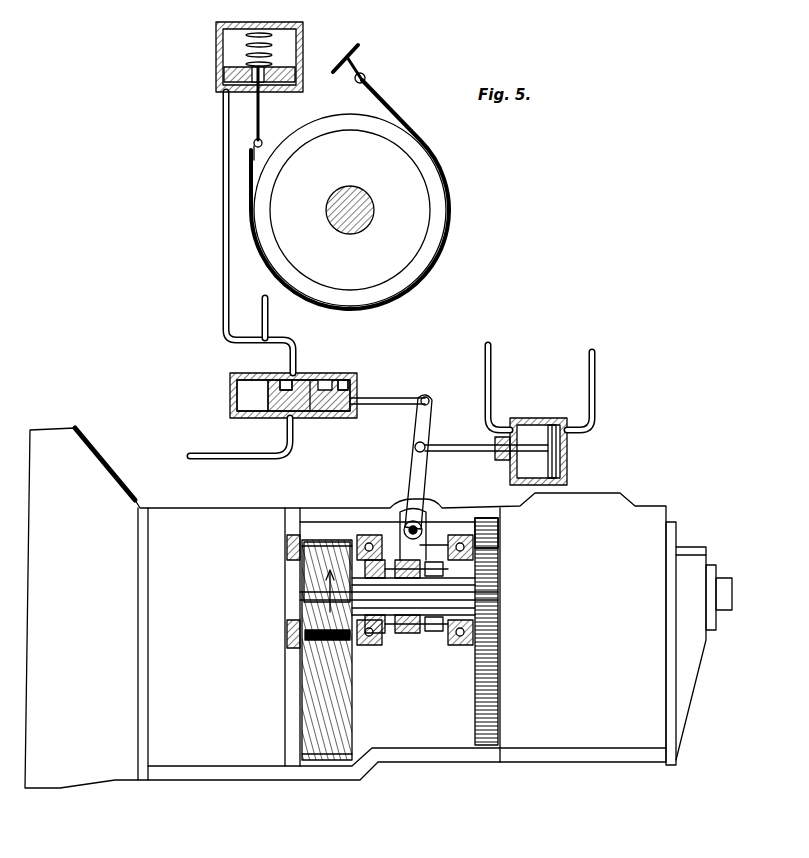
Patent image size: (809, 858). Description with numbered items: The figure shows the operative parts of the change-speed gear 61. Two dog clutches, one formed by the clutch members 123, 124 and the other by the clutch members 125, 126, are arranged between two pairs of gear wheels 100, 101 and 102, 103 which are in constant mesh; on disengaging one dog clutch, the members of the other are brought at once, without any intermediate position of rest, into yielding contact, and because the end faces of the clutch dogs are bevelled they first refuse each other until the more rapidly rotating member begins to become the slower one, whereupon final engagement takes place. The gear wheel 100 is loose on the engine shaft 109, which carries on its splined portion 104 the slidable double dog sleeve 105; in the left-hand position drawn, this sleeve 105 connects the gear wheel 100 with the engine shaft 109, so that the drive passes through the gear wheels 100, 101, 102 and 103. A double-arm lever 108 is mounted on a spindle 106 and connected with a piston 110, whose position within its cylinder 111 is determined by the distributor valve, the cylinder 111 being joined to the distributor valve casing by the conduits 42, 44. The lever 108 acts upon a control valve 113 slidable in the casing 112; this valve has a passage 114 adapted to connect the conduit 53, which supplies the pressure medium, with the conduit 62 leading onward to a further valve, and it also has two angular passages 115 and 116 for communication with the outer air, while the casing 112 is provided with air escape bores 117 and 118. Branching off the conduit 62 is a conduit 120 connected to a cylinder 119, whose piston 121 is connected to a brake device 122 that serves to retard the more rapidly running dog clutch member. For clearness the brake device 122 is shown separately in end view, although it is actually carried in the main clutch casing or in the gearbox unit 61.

The change-speed gear 61 is at (248, 760).
The gear wheel 100 is at (302, 566).
The gear wheel 101 is at (302, 684).
The gear wheel 102 is at (498, 692).
The gear wheel 103 is at (498, 573).
The splined portion 104 is at (450, 645).
The double dog sleeve 105 is at (410, 640).
The spindle 106 is at (420, 523).
The double-arm lever 108 is at (426, 422).
The engine shaft 109 is at (362, 216).
The piston 110 is at (552, 430).
The cylinder 111 is at (567, 460).
The casing 112 is at (232, 378).
The control valve 113 is at (322, 412).
The passage 114 is at (310, 382).
The angular passage 115 is at (284, 383).
The angular passage 116 is at (343, 382).
The air escape bore 117 is at (236, 398).
The air escape bore 118 is at (357, 395).
The cylinder 119 is at (216, 40).
The conduit 120 is at (223, 214).
The piston 121 is at (216, 78).
The brake device 122 is at (415, 230).
The dog clutch member 123 is at (369, 535).
The dog clutch member 124 is at (376, 645).
The dog clutch member 125 is at (440, 535).
The dog clutch member 126 is at (490, 600).
The conduit 42 is at (590, 364).
The conduit 44 is at (486, 364).
The conduit 53 is at (266, 458).
The conduit 62 is at (269, 318).